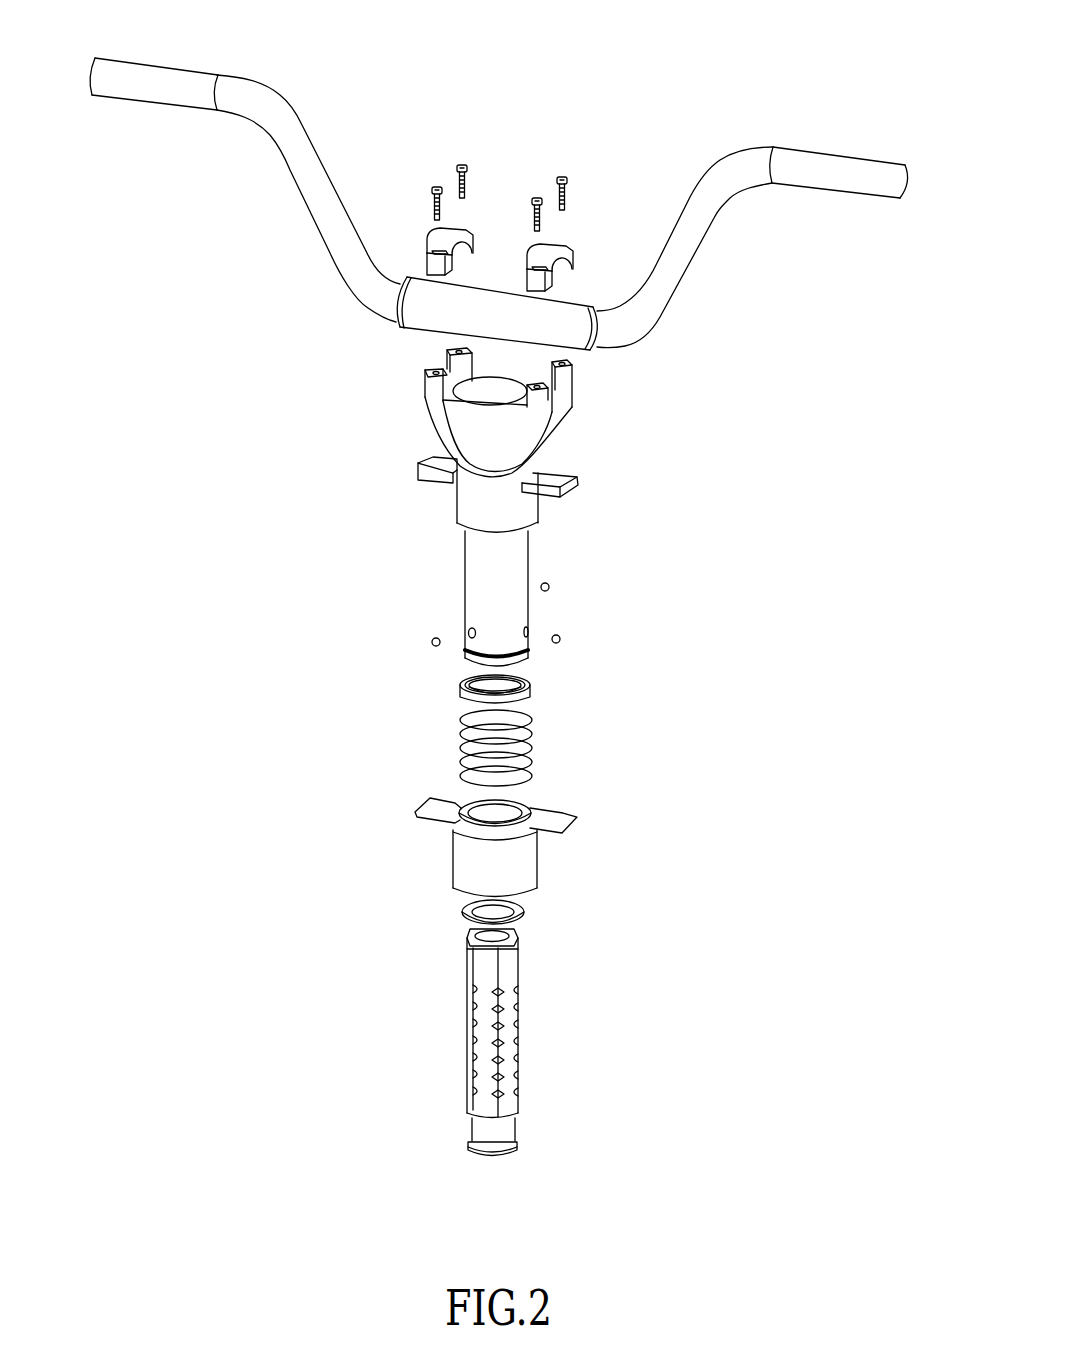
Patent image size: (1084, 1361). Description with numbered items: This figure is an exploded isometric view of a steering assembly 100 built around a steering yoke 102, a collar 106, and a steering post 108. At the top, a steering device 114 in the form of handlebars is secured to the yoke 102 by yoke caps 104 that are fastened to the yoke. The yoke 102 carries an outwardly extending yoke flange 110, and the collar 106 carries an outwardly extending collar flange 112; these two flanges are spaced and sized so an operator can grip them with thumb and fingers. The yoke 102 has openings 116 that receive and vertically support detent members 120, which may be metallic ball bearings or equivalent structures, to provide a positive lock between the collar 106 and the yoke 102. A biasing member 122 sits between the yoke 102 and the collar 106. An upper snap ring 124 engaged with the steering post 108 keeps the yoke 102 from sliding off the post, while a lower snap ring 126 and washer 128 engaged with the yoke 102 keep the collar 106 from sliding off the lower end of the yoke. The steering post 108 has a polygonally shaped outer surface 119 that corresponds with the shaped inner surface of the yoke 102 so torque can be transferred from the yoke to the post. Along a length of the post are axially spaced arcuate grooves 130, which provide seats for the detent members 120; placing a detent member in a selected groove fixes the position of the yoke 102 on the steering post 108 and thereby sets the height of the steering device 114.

The steering assembly 100 is at (733, 42).
The steering yoke 102 is at (573, 418).
The yoke caps 104 is at (438, 242).
The collar 106 is at (567, 860).
The steering post 108 is at (543, 1102).
The yoke flange 110 is at (563, 478).
The collar flange 112 is at (562, 810).
The steering device 114 is at (715, 252).
The openings 116 is at (523, 630).
The polygonally shaped outer surface 119 is at (508, 970).
The detent members 120 is at (549, 590).
The biasing member 122 is at (450, 743).
The upper snap ring 124 is at (530, 910).
The lower snap ring 126 is at (530, 703).
The washer 128 is at (533, 684).
The arcuate grooves 130 is at (518, 1023).